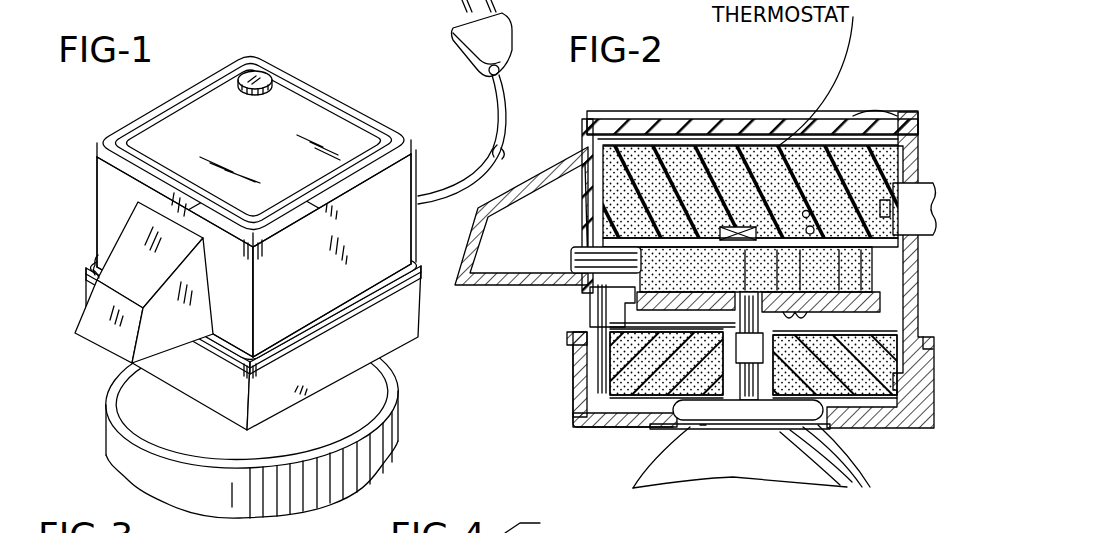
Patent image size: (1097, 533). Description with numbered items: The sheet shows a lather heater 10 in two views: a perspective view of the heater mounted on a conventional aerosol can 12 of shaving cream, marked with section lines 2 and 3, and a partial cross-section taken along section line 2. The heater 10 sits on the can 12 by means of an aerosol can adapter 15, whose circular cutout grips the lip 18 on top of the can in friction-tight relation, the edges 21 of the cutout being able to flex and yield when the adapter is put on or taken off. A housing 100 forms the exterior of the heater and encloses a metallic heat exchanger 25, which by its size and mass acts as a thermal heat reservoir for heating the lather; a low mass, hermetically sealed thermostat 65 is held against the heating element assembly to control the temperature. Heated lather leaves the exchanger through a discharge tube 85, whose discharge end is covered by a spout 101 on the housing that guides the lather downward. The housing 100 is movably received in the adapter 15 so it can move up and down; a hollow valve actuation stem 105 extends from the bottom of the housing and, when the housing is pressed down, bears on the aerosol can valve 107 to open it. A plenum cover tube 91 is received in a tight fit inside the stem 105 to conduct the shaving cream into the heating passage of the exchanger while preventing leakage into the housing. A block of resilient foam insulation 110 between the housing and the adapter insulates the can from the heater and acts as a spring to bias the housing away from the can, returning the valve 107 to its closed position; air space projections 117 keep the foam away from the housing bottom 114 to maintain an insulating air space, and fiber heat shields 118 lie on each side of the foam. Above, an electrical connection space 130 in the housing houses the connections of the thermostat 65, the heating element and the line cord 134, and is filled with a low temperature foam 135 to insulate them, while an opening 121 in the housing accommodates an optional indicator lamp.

In FIG. 1, the lather heater 10 is at (120, 118).
In FIG. 2, the lather heater 10 is at (786, 80).
In FIG. 1, the aerosol can 12 is at (125, 440).
In FIG. 2, the aerosol can 12 is at (803, 477).
In FIG. 1, the aerosol can adapter 15 is at (387, 340).
In FIG. 2, the aerosol can adapter 15 is at (575, 413).
In FIG. 2, the lip 18 is at (827, 428).
In FIG. 2, the edges of cutout 21 is at (670, 405).
In FIG. 2, the heat exchanger 25 is at (663, 245).
In FIG. 2, the thermostat 65 is at (738, 227).
In FIG. 2, the discharge tube 85 is at (577, 255).
In FIG. 2, the plenum cover tube 91 is at (745, 296).
In FIG. 1, the housing 100 is at (357, 143).
In FIG. 1, the spout 101 is at (100, 330).
In FIG. 2, the spout 101 is at (553, 173).
In FIG. 2, the valve actuation stem 105 is at (693, 423).
In FIG. 2, the aerosol can valve 107 is at (745, 403).
In FIG. 2, the resilient foam insulation 110 is at (608, 378).
In FIG. 2, the housing bottom 114 is at (627, 320).
In FIG. 2, the air space projections 117 is at (590, 350).
In FIG. 2, the fiber heat shields 118 is at (600, 324).
In FIG. 1, the opening 121 is at (250, 76).
In FIG. 2, the opening 121 is at (875, 113).
In FIG. 2, the electrical connection space 130 is at (709, 168).
In FIG. 1, the line cord 134 is at (498, 125).
In FIG. 2, the low temperature foam 135 is at (667, 172).
In FIG. 1, the section line 2— 2 is at (226, 165).
In FIG. 1, the section line 3— 3 is at (247, 82).